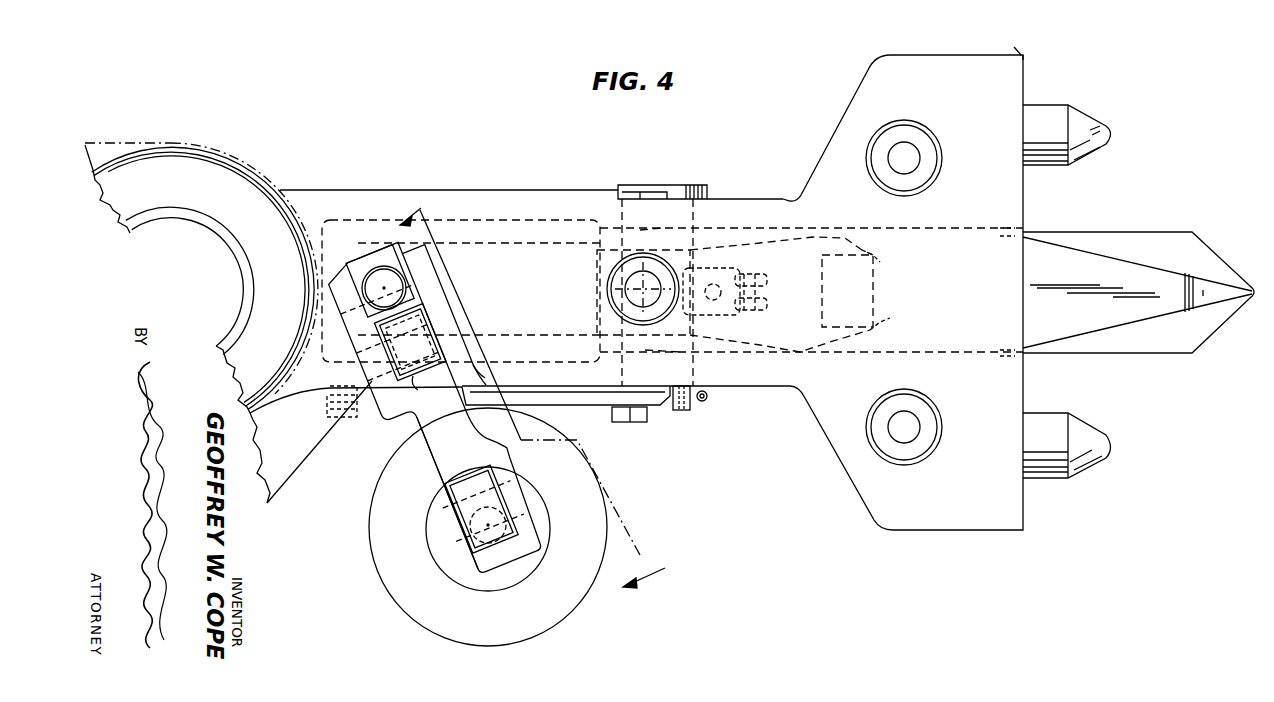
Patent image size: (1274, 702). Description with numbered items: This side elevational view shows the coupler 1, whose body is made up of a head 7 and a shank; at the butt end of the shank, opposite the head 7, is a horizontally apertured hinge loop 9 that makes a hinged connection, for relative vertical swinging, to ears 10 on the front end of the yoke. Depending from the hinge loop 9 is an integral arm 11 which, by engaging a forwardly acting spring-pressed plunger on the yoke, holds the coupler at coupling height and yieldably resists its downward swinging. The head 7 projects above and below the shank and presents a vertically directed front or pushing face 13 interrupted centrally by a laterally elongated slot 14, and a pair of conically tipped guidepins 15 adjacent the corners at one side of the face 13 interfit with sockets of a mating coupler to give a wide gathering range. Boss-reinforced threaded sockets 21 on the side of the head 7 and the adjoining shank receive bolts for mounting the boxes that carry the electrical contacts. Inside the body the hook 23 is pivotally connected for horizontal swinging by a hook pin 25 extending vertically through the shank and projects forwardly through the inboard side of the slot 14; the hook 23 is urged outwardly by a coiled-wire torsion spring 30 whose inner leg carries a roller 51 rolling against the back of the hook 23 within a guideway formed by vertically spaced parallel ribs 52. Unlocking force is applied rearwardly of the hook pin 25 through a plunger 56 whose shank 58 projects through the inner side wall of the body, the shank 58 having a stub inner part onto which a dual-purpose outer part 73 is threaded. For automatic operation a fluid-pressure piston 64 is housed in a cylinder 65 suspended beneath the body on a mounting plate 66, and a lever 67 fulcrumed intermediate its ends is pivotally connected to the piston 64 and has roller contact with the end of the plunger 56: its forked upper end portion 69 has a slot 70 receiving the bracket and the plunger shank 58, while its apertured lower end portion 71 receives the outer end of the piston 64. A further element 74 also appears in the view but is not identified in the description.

The coupler 1 is at (1026, 70).
The head 7 is at (710, 315).
The hinge loop 9 is at (233, 166).
The ears 10 is at (160, 143).
The arm 11 is at (292, 470).
The front or pushing face 13 is at (1025, 210).
The slot 14 is at (994, 228).
The guidepins 15 is at (1090, 128).
The threaded sockets 21 is at (904, 140).
The hook 23 is at (1122, 233).
The hook pin 25 is at (708, 190).
The hook spring 30 is at (600, 270).
The roller 51 is at (822, 291).
The ribs 52 is at (876, 259).
The plunger 56 is at (367, 276).
The plunger shank 58 is at (410, 284).
The piston 64 is at (525, 500).
The cylinder 65 is at (370, 533).
The mounting plate 66 is at (595, 396).
The lever 67 is at (440, 436).
The forked upper end portion 69 is at (443, 300).
The slot 70 is at (425, 388).
The apertured lower end portion 71 is at (530, 520).
The outer part 73 is at (384, 286).
The axle 74 is at (480, 500).